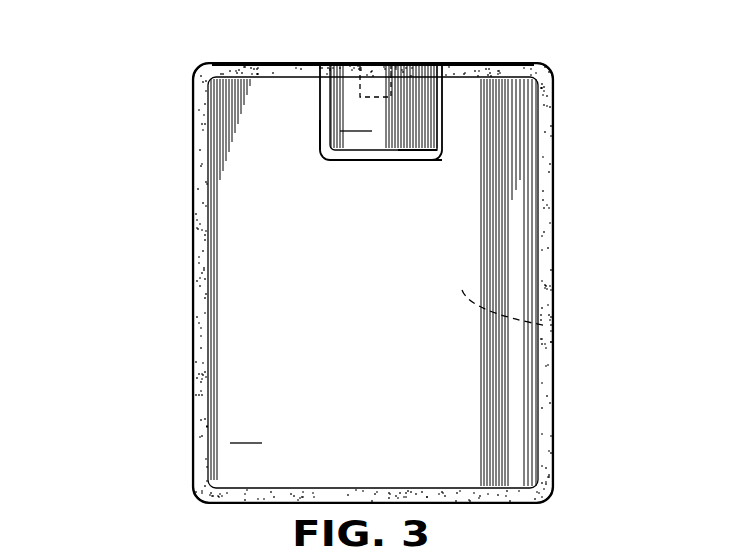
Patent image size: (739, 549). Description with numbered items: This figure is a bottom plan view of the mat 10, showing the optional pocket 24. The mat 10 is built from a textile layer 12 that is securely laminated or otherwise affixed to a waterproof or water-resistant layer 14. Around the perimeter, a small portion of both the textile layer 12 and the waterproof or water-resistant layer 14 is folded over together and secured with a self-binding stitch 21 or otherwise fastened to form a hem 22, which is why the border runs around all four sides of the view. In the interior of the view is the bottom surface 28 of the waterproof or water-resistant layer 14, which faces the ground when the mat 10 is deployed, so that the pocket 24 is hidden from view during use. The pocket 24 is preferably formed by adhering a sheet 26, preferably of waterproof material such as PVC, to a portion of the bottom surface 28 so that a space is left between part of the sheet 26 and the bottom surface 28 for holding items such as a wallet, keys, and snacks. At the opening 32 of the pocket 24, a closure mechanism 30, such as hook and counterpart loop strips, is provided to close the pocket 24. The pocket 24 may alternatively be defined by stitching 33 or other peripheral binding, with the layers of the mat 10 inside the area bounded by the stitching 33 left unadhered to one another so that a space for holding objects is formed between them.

The mat 10 is at (178, 111).
The textile layer 12 is at (549, 327).
The waterproof or water-resistant layer 14 is at (246, 430).
The self-binding stitch 21 is at (203, 212).
The hem 22 is at (197, 158).
The pocket 24 is at (383, 107).
The sheet 26 is at (336, 102).
The bottom surface 28 is at (245, 352).
The closure mechanism 30 is at (382, 80).
The opening 32 is at (397, 70).
The stitching 33 is at (320, 127).